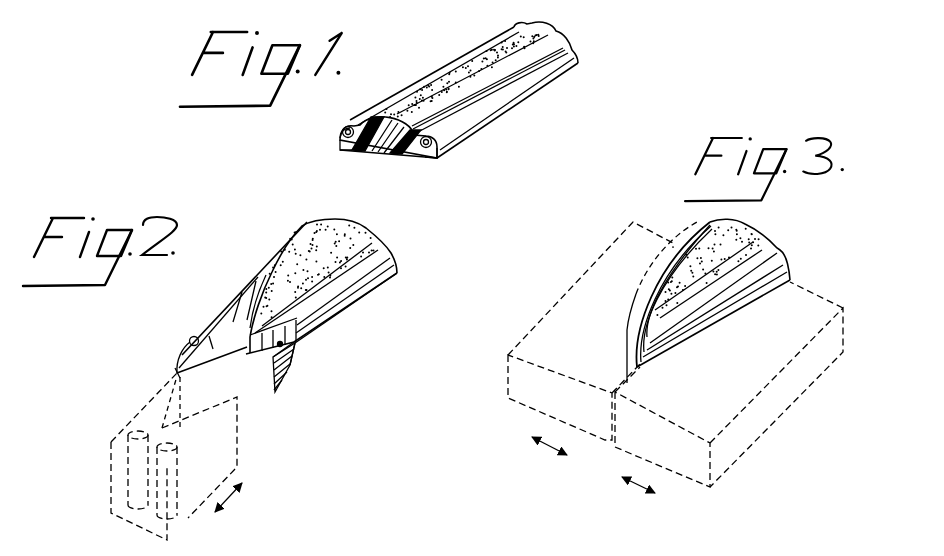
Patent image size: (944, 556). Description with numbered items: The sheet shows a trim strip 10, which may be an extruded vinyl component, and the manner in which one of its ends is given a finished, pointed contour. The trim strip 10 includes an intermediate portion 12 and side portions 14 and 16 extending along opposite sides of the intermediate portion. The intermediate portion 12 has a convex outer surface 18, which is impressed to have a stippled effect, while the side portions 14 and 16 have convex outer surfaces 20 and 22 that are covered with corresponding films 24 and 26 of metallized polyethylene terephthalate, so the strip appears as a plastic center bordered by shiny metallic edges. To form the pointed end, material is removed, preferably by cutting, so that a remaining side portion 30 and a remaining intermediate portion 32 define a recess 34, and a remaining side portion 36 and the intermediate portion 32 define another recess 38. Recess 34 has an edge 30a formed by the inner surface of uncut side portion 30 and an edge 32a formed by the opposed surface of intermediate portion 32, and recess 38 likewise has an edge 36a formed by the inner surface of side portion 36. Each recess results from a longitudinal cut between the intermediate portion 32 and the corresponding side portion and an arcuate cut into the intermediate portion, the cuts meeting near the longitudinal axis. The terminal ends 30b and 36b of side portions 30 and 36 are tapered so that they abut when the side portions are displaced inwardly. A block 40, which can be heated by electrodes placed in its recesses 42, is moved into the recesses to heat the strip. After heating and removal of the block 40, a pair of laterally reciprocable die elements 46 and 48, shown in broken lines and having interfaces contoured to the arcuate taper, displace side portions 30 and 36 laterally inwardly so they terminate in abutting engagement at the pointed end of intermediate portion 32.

In FIG. 1, the trim strip 10 is at (440, 56).
In FIG. 1, the intermediate portion 12 is at (377, 140).
In FIG. 1, the side portion 14 is at (356, 148).
In FIG. 1, the side portion 16 is at (428, 152).
In FIG. 1, the convex outer surface 18 is at (442, 93).
In FIG. 1, the convex outer surface 20 is at (433, 130).
In FIG. 1, the convex outer surface 22 is at (342, 143).
In FIG. 1, the film 24 is at (343, 128).
In FIG. 1, the film 26 is at (435, 143).
In FIG. 2, the remaining side portion 30 is at (212, 325).
In FIG. 3, the remaining side portion 30 is at (637, 308).
In FIG. 2, the edge 30a is at (242, 293).
In FIG. 2, the terminal end 30b is at (192, 342).
In FIG. 2, the remaining intermediate portion 32 is at (280, 305).
In FIG. 3, the remaining intermediate portion 32 is at (688, 297).
In FIG. 2, the edge 32a is at (237, 297).
In FIG. 2, the recess 34 is at (177, 373).
In FIG. 2, the remaining side portion 36 is at (292, 350).
In FIG. 3, the remaining side portion 36 is at (743, 298).
In FIG. 2, the edge 36a is at (284, 372).
In FIG. 2, the terminal end 36b is at (298, 330).
In FIG. 2, the recess 38 is at (262, 362).
In FIG. 2, the block 40 is at (187, 518).
In FIG. 2, the recesses 42 is at (130, 430).
In FIG. 3, the die element 46 is at (518, 402).
In FIG. 3, the die element 48 is at (737, 460).